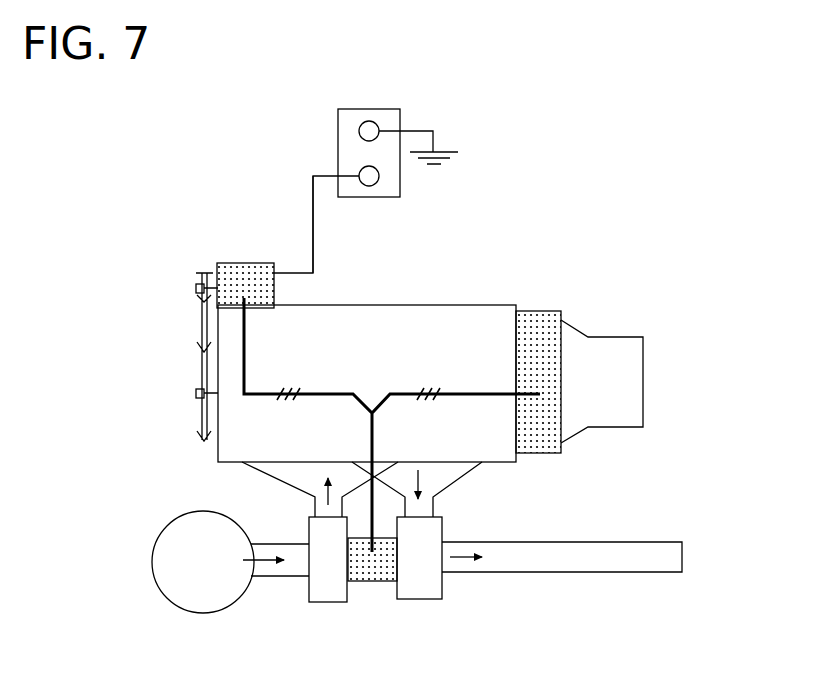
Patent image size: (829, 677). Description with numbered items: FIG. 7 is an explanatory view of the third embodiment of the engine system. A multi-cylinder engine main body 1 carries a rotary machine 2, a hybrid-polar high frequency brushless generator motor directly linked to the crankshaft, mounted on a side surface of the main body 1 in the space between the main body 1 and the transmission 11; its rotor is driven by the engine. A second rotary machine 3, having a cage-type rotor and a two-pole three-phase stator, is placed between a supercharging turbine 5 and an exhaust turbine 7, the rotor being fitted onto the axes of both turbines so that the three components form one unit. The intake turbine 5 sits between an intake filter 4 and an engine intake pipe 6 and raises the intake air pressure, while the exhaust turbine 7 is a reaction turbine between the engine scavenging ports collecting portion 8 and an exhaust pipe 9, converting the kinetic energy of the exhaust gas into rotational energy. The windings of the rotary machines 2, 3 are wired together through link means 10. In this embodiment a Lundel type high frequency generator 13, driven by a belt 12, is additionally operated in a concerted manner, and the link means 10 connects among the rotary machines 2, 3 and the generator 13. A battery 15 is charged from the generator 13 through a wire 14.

The engine main body 1 is at (453, 320).
The rotary machine 2 is at (543, 323).
The rotary machine 3 is at (365, 577).
The intake filter 4 is at (172, 568).
The supercharging turbine 5 is at (313, 583).
The engine intake pipe 6 is at (307, 483).
The exhaust turbine 7 is at (430, 583).
The engine scavenging ports collecting portion 8 is at (443, 487).
The exhaust pipe 9 is at (555, 563).
The link means 10 is at (478, 403).
The transmission 11 is at (623, 372).
The belt 12 is at (202, 375).
The Lundel type high frequency generator 13 is at (228, 272).
The wire 14 is at (311, 223).
The battery 15 is at (350, 113).